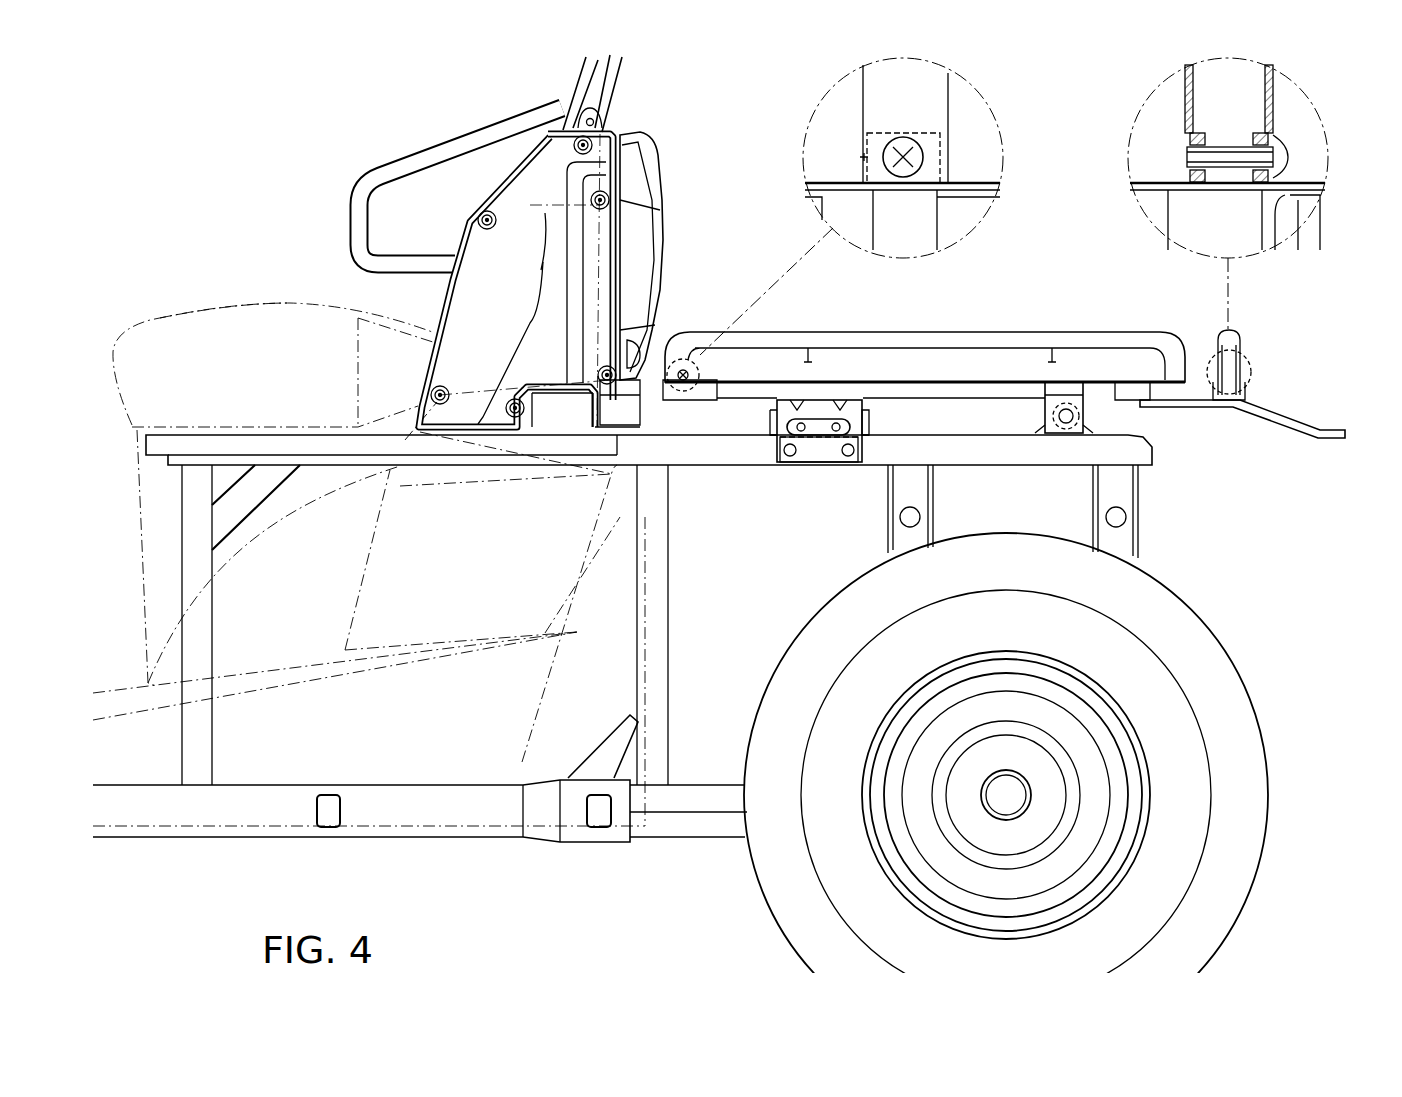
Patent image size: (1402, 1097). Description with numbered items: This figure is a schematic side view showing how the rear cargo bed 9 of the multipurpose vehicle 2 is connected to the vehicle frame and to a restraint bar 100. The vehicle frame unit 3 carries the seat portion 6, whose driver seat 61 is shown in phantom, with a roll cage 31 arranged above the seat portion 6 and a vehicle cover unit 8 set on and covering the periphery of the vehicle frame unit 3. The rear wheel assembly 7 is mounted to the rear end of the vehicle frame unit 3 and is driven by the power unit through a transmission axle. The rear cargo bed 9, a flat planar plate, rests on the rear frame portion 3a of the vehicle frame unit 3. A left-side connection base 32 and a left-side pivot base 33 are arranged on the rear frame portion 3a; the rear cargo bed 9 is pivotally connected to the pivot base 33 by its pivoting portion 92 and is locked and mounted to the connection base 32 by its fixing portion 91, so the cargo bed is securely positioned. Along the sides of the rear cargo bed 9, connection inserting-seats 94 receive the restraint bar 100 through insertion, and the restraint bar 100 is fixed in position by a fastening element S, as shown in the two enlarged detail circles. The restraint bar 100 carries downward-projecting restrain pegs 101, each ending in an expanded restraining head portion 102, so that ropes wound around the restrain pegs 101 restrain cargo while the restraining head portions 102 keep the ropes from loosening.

The multipurpose vehicle 2 is at (1288, 598).
The vehicle frame unit 3 is at (405, 152).
The rear frame portion 3a is at (938, 450).
The seat portion 6 is at (238, 300).
The driver seat 61 is at (178, 330).
The rear wheel assembly 7 is at (1258, 795).
The vehicle cover unit 8 is at (135, 555).
The rear cargo bed 9 is at (1145, 365).
The roll cage 31 is at (605, 83).
The connection base 32 is at (772, 440).
The pivot base 33 is at (1032, 417).
The fixing portion 91 is at (820, 450).
The pivoting portion 92 is at (1076, 387).
The connection inserting-seat 94 is at (862, 155).
The restraint bar 100 is at (1052, 335).
The restrain peg 101 is at (812, 360).
The restraining head portion 102 is at (825, 375).
The fastening element S is at (688, 365).